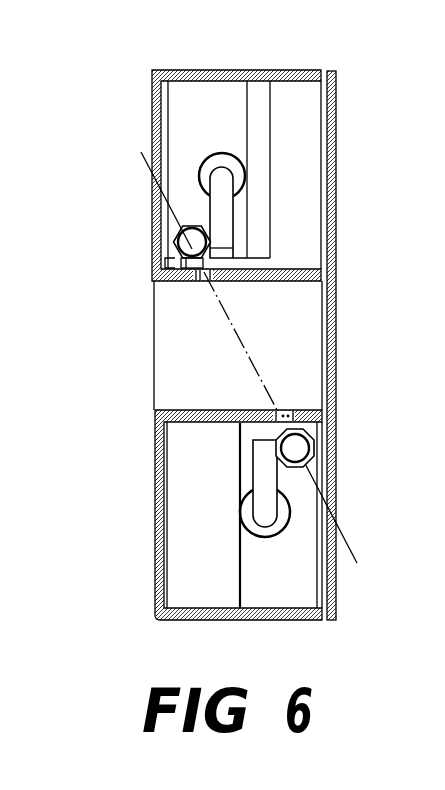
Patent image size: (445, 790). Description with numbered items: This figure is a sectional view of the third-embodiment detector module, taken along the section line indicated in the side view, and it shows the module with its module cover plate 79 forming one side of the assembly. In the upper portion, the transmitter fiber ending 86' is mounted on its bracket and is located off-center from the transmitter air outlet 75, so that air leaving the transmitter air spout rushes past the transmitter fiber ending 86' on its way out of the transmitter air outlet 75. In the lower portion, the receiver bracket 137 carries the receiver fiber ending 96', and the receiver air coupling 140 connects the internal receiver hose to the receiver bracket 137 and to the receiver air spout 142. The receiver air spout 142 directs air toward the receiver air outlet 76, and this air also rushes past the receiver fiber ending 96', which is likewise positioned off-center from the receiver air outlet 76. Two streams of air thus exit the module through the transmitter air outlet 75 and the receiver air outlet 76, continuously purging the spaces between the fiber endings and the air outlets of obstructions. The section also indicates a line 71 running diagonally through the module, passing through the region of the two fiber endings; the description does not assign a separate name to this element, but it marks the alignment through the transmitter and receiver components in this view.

The module cover plate 79 is at (336, 101).
The transmitter fiber ending 86' is at (186, 174).
The transmitter air outlet 75 is at (199, 283).
The axis centerline 71 is at (237, 328).
The receiver air outlet 76 is at (288, 411).
The receiver fiber ending 96' is at (334, 450).
The receiver air spout 142 is at (257, 512).
The receiver air coupling 140 is at (250, 538).
The receiver bracket 137 is at (248, 603).